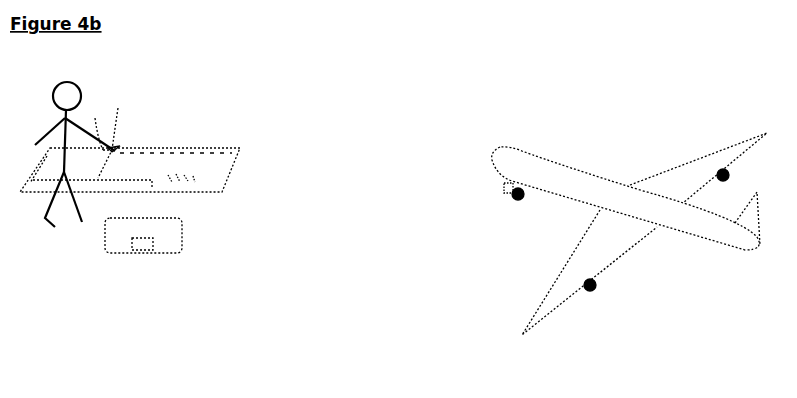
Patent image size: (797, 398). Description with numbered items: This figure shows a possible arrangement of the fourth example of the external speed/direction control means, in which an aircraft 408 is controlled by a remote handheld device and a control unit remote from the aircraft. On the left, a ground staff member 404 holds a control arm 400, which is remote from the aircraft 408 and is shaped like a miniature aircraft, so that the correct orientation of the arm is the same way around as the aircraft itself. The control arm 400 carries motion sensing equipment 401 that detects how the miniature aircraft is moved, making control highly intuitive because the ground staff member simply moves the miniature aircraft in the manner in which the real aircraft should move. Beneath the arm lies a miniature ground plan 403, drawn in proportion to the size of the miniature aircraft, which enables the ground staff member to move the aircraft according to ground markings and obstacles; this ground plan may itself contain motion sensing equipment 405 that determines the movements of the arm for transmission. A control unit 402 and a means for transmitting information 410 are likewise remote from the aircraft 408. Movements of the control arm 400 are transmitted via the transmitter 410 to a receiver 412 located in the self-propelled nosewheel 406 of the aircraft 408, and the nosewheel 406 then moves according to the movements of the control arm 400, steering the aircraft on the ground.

The control arm 400 is at (117, 143).
The motion sensing equipment 401 is at (115, 125).
The control unit 402 is at (118, 242).
The miniature ground plan 403 is at (224, 179).
The user 404 is at (47, 213).
The motion sensing equipment 405 is at (203, 198).
The self-propelled nosewheel 406 is at (512, 200).
The aircraft 408 is at (563, 180).
The means for transmitting information 410 is at (145, 243).
The receiver 412 is at (506, 187).